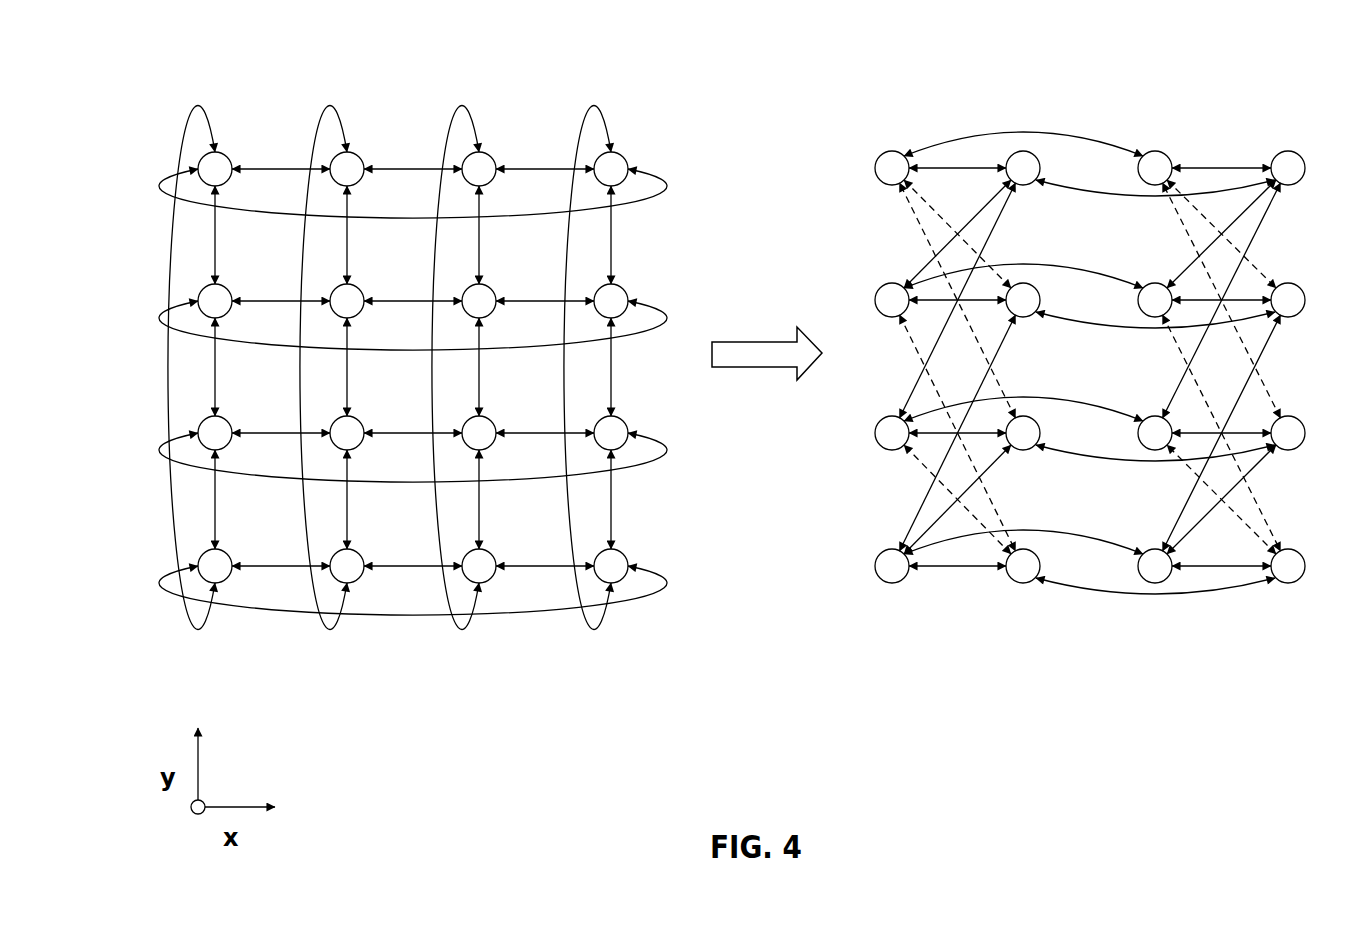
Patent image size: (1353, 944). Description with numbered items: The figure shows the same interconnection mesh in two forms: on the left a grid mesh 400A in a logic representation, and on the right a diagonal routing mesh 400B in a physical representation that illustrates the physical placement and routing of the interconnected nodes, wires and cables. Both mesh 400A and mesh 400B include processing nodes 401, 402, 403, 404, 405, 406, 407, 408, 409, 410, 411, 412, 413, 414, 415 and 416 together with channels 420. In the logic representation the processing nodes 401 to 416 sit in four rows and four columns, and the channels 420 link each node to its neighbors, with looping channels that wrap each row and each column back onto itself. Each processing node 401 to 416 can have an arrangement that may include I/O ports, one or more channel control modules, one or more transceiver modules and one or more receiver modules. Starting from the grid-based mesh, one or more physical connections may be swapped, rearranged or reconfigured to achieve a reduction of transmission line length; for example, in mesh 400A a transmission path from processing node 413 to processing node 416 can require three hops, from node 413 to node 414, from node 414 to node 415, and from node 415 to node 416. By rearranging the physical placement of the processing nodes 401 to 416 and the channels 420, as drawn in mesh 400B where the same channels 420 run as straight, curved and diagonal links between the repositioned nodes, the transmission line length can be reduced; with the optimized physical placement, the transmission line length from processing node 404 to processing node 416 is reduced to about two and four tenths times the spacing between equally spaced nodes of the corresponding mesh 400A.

The grid mesh 400A is at (622, 86).
The diagonal routing mesh 400B is at (1242, 88).
The processing node 401 is at (619, 168).
The processing node 402 is at (619, 168).
The processing node 403 is at (817, 168).
The processing node 404 is at (949, 168).
The processing node 405 is at (553, 300).
The processing node 406 is at (685, 300).
The processing node 407 is at (883, 300).
The processing node 408 is at (883, 300).
The processing node 409 is at (619, 499).
The processing node 410 is at (619, 499).
The processing node 411 is at (817, 499).
The processing node 412 is at (949, 499).
The processing node 413 is at (553, 499).
The processing node 414 is at (685, 499).
The processing node 415 is at (883, 499).
The processing node 416 is at (883, 499).
The channels 420 is at (470, 117).